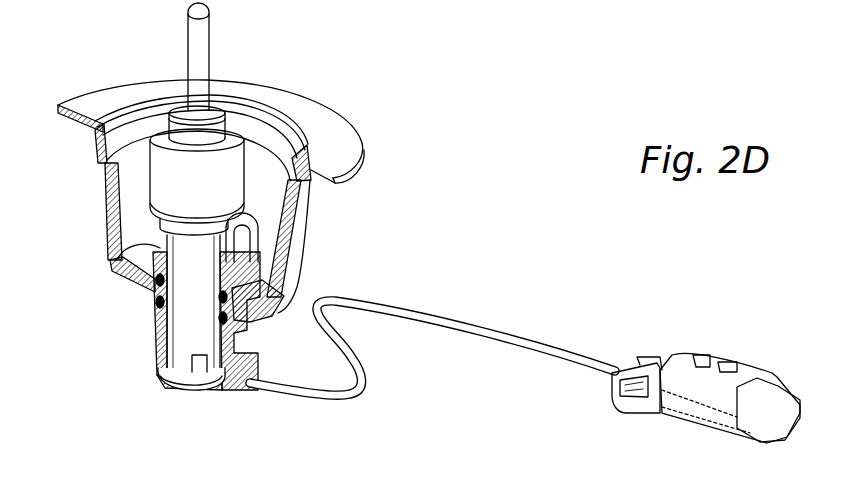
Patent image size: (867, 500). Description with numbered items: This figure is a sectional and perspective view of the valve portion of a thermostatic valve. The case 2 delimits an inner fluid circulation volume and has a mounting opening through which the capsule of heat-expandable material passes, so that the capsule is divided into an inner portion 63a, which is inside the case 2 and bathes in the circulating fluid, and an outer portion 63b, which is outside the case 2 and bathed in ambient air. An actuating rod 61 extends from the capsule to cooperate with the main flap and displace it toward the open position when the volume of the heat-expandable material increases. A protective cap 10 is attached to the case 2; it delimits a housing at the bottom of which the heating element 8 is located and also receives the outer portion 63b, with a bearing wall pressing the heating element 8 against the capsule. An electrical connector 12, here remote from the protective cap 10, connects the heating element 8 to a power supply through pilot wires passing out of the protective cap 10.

The case 2 is at (290, 231).
The actuating rod 61 is at (196, 43).
The inner portion 63a is at (167, 178).
The outer portion 63b is at (185, 322).
The protective cap 10 is at (155, 342).
The heating element 8 is at (185, 380).
The electrical connector 12 is at (703, 407).